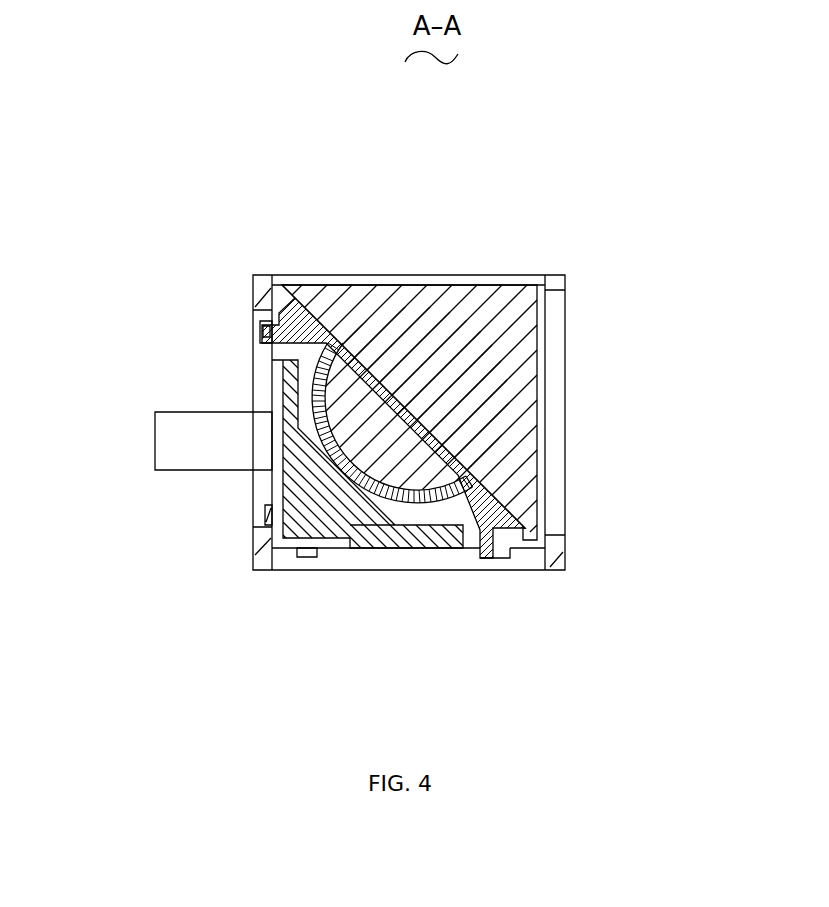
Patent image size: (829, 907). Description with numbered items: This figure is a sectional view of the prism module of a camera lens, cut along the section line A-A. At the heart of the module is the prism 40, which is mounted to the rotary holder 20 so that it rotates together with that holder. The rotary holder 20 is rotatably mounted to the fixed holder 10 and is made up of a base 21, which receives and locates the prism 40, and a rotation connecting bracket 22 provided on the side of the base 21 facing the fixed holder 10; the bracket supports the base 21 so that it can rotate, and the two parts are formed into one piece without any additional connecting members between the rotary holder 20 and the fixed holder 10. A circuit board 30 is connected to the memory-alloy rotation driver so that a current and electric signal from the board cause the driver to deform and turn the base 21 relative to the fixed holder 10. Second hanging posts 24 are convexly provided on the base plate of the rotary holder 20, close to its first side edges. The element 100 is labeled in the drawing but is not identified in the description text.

The housing 100 is at (537, 567).
The prism 40 is at (513, 308).
The fixed holder 10 is at (297, 526).
The circuit board 30 is at (163, 447).
The second hanging posts 24 is at (260, 325).
The rotary holder 20 is at (498, 422).
The base 21 is at (455, 471).
The rotation connecting bracket 22 is at (395, 443).